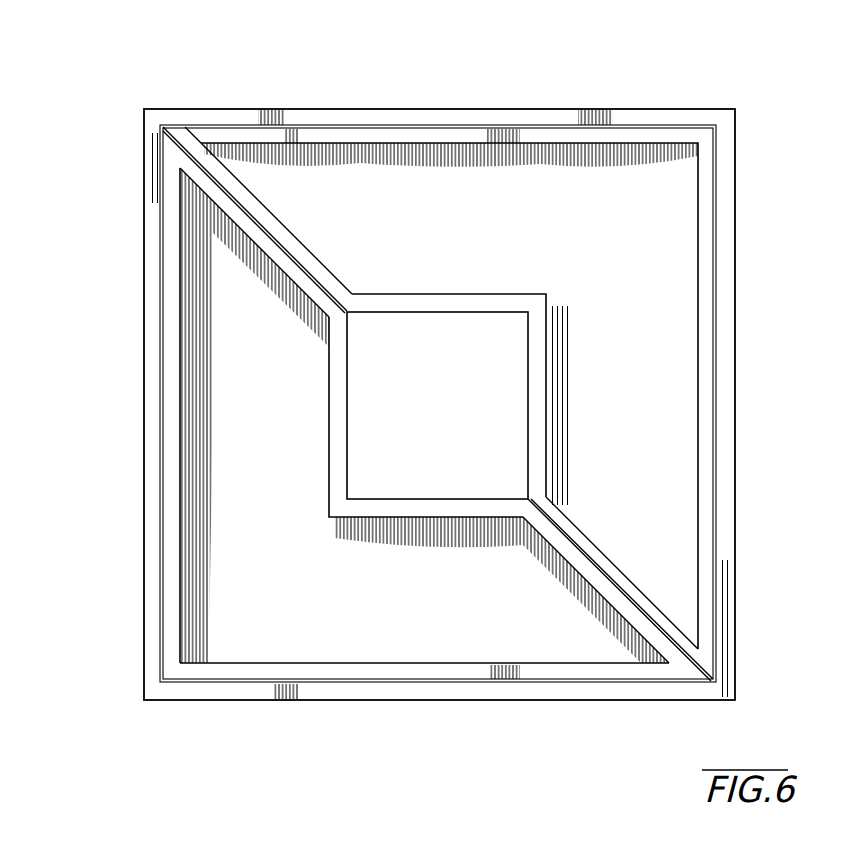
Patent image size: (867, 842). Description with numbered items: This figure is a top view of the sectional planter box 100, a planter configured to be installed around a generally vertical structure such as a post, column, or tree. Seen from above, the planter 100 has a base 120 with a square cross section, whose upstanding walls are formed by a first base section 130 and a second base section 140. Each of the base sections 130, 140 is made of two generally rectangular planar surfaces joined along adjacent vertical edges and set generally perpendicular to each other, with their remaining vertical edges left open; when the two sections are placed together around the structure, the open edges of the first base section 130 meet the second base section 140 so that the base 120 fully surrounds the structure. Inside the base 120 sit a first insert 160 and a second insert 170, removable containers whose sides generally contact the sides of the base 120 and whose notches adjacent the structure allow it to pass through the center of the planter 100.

The sectional planter box 100 is at (182, 77).
The base 120 is at (148, 104).
The first base section 130 is at (155, 193).
The second base section 140 is at (718, 652).
The first insert 160 is at (343, 185).
The second insert 170 is at (582, 670).